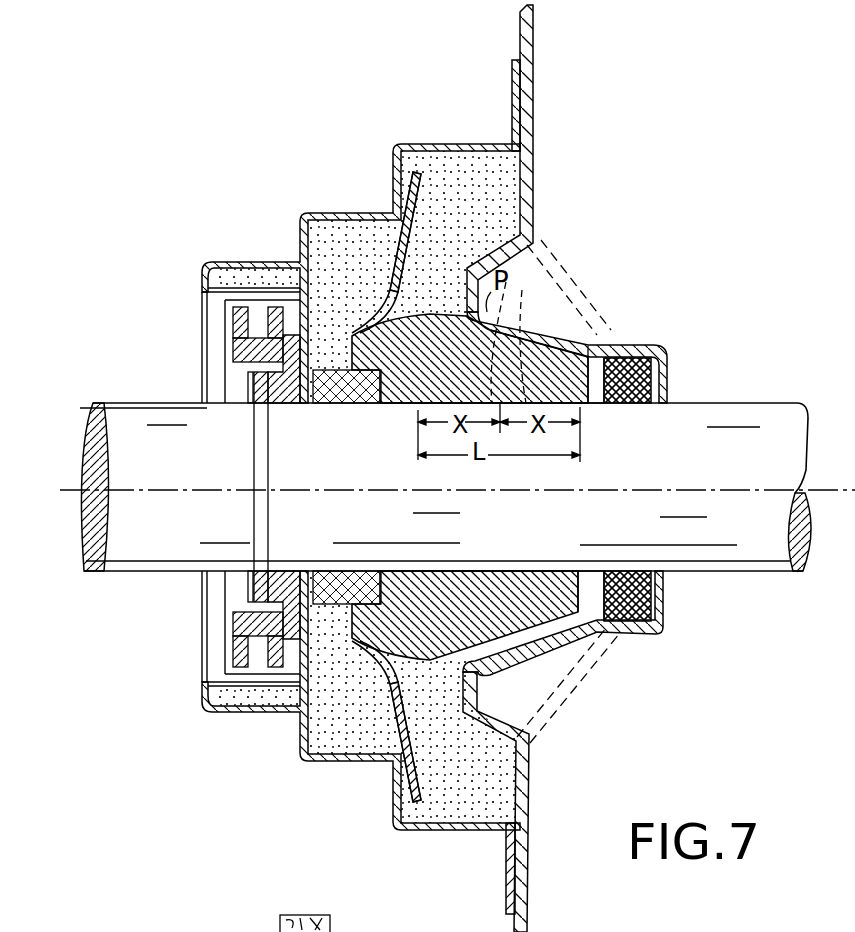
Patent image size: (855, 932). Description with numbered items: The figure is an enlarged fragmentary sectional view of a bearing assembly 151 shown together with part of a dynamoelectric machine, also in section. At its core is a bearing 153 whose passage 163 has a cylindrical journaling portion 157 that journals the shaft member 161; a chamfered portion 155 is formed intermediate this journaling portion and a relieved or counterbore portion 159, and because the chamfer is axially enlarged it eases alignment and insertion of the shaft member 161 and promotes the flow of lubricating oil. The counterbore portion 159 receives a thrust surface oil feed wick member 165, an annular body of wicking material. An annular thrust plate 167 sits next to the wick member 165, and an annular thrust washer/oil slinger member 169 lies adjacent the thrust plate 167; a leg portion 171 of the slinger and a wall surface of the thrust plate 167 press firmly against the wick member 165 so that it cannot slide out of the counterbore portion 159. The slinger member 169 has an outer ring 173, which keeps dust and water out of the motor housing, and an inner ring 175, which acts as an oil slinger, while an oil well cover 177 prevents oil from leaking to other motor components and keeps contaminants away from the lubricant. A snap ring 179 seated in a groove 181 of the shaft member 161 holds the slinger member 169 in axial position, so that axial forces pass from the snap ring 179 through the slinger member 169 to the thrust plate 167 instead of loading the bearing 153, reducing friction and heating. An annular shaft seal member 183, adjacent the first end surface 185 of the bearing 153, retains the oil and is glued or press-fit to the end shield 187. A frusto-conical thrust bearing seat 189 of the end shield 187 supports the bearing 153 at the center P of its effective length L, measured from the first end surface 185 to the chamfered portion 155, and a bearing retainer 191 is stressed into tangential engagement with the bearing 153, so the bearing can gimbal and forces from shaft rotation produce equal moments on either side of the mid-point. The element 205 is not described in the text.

The bearing assembly 151 is at (698, 289).
The bearing 153 is at (463, 377).
The chamfered portion 155 is at (388, 405).
The cylindrical journaling portion 157 is at (550, 348).
The relieved or counterbore portion 159 is at (345, 405).
The shaft member 161 is at (793, 571).
The passage 163 is at (575, 407).
The thrust surface oil feed wick member 165 is at (352, 403).
The thrust plate 167 is at (233, 303).
The thrust washer/oil slinger member 169 is at (233, 343).
The leg portion 171 is at (303, 410).
The outer ring 173 is at (233, 313).
The inner ring 175 is at (235, 360).
The oil well cover 177 is at (423, 143).
The snap ring 179 is at (247, 385).
The groove 181 is at (262, 546).
The shaft seal member 183 is at (667, 360).
The first end surface 185 is at (597, 370).
The end shield 187 is at (533, 186).
The frusto-conical thrust bearing seat 189 is at (540, 320).
The bearing retainer 191 is at (398, 238).
The stator element 205 is at (262, 926).